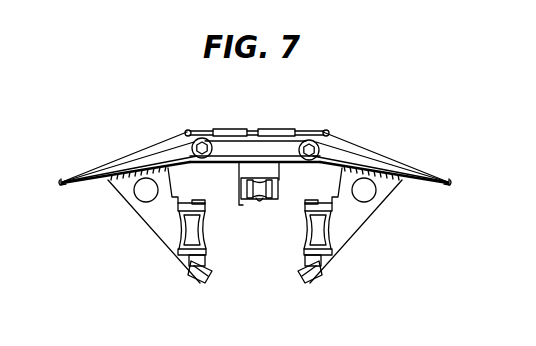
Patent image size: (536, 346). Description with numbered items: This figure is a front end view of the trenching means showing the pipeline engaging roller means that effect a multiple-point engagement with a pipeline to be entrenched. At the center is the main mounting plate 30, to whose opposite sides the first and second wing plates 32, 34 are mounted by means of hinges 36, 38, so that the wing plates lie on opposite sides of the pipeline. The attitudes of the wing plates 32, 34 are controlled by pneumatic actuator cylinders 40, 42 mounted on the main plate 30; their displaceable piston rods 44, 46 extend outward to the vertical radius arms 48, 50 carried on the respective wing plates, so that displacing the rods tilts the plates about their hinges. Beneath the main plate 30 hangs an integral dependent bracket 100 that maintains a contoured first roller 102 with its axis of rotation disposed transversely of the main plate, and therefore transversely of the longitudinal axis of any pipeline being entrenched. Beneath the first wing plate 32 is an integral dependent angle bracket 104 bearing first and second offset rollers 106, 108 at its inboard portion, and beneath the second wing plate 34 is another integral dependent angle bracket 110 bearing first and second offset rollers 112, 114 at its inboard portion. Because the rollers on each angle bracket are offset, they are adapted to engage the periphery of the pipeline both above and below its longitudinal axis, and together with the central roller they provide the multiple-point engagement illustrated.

The main mounting plate 30 is at (229, 162).
The first wing plate 32 is at (59, 182).
The second wing plate 34 is at (449, 183).
The hinge 36 is at (184, 130).
The hinge 38 is at (329, 133).
The pneumatic actuator cylinder 40 is at (230, 129).
The pneumatic actuator cylinder 42 is at (277, 129).
The piston rod 44 is at (197, 130).
The piston rod 46 is at (308, 130).
The vertical radius arm 48 is at (143, 146).
The vertical radius arm 50 is at (352, 140).
The dependent bracket 100 is at (236, 164).
The contoured first roller 102 is at (257, 200).
The dependent angle bracket 104 is at (148, 211).
The first offset roller 106 is at (178, 238).
The second offset roller 108 is at (211, 262).
The dependent angle bracket 110 is at (356, 217).
The first offset roller 112 is at (318, 233).
The second offset roller 114 is at (303, 258).